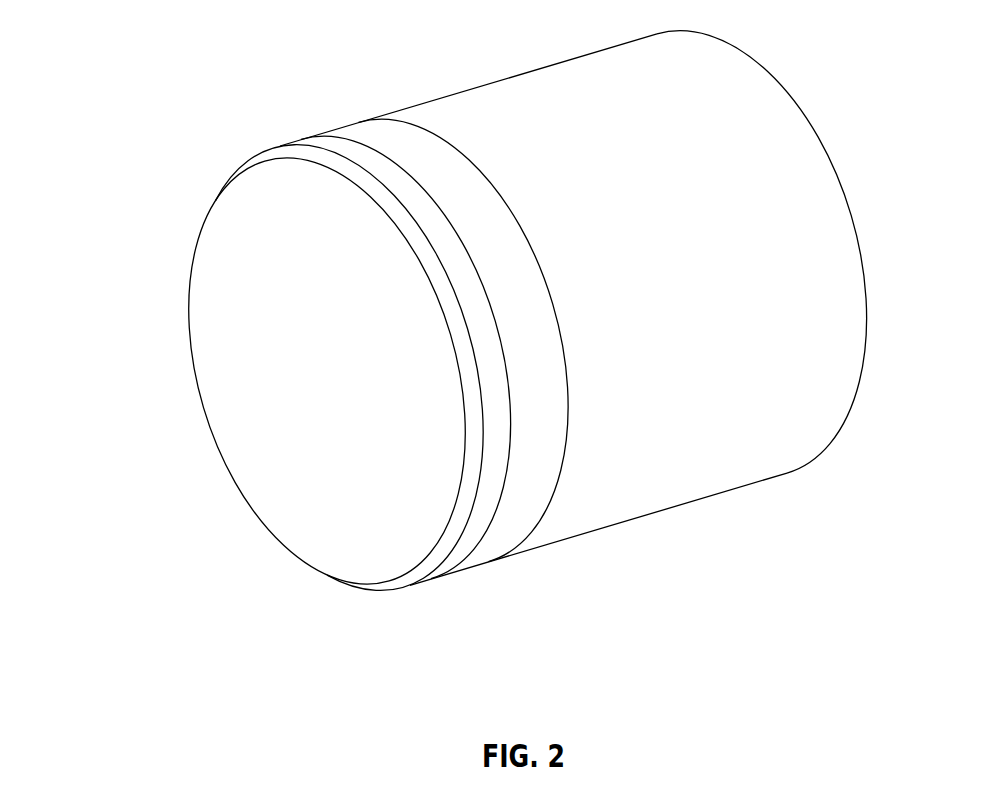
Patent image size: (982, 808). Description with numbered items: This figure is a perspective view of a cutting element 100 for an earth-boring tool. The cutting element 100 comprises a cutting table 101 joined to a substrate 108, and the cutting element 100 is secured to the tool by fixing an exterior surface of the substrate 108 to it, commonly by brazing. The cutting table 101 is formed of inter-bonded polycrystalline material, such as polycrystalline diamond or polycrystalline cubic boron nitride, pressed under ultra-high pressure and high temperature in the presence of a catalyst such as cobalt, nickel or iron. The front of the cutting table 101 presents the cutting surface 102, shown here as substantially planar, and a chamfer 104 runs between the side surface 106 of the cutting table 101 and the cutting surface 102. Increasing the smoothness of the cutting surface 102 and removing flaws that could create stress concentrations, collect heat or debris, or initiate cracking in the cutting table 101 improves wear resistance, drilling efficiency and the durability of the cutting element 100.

The cutting element 100 is at (170, 98).
The cutting table 101 is at (355, 159).
The cutting surface 102 is at (248, 338).
The chamfer 104 is at (243, 175).
The side surface 106 is at (450, 563).
The substrate 108 is at (755, 462).